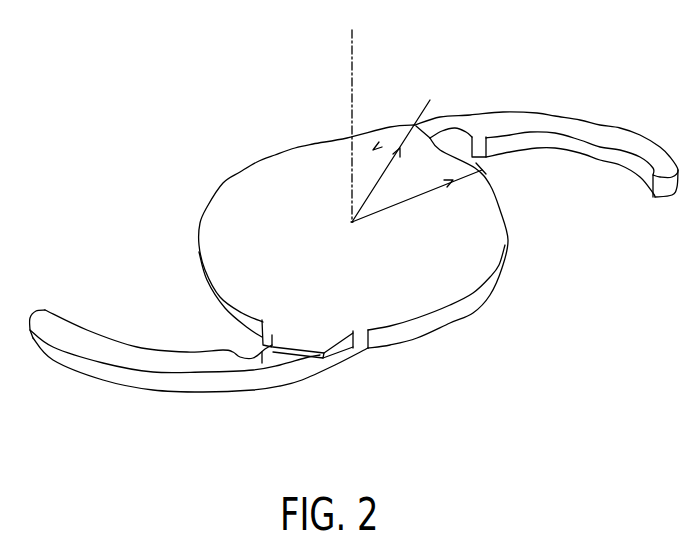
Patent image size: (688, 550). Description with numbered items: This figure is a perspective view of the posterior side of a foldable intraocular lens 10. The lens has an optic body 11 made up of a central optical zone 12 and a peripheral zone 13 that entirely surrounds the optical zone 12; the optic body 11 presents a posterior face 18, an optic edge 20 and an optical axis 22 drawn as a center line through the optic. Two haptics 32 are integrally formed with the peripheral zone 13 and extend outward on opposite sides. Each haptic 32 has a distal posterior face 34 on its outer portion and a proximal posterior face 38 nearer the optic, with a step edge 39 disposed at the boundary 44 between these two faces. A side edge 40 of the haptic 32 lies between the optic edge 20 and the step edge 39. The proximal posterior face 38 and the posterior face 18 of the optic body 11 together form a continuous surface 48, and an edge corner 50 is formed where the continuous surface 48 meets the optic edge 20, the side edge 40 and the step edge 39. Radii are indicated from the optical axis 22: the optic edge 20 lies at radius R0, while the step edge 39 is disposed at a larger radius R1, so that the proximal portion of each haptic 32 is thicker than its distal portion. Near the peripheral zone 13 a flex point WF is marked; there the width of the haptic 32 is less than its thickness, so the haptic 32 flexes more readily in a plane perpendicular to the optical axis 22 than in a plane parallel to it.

The foldable intraocular lens 10 is at (580, 370).
The optic body 11 is at (527, 248).
The optical zone 12 is at (361, 265).
The peripheral zone 13 is at (207, 207).
The posterior face 18 is at (275, 170).
The optic edge 20 is at (410, 330).
The optical axis 22 is at (360, 47).
The haptic 32 is at (590, 90).
The distal posterior face 34 is at (628, 145).
The proximal posterior face 38 is at (286, 334).
The step edge 39 is at (296, 356).
The side edge 40 is at (342, 350).
The boundary 44 is at (312, 345).
The continuous surface 48 is at (375, 147).
The edge corner 50 is at (387, 325).
The radius of the optic edge R0 is at (482, 170).
The radius of the step edge R1 is at (430, 100).
The flex point WF is at (262, 363).